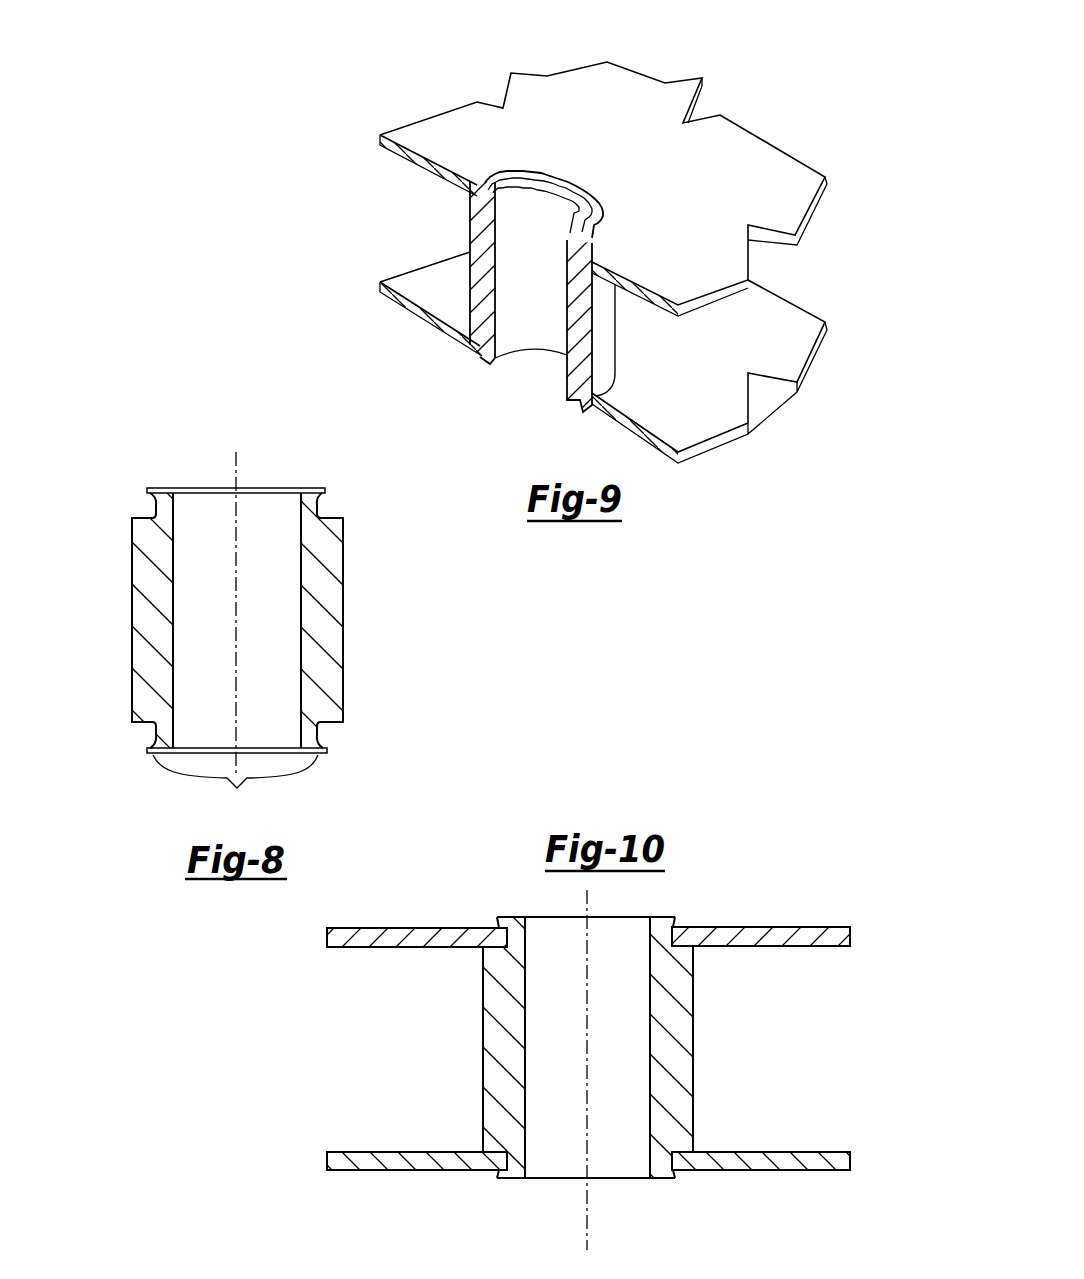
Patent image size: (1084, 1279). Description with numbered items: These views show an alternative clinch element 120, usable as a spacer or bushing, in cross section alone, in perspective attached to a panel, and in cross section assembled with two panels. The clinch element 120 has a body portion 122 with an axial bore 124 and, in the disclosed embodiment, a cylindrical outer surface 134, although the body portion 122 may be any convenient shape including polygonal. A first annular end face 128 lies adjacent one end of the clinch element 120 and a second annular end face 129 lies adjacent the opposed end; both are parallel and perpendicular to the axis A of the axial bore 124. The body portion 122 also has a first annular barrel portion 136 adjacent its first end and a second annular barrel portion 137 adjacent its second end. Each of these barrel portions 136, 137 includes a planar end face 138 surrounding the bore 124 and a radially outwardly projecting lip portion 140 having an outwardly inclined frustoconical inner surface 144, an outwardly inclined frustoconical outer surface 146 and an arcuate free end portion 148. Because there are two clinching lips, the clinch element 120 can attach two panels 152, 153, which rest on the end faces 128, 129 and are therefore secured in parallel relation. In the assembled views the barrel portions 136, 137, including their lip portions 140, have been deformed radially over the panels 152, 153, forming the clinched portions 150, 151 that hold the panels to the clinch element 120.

In FIG. 8, the clinch element 120 is at (100, 538).
In FIG. 9, the clinch element 120 is at (465, 236).
In FIG. 10, the clinch element 120 is at (698, 1073).
In FIG. 8, the body portion 122 is at (138, 608).
In FIG. 10, the body portion 122 is at (678, 1010).
In FIG. 8, the axial bore 124 is at (300, 597).
In FIG. 9, the axial bore 124 is at (513, 320).
In FIG. 10, the axial bore 124 is at (649, 1068).
In FIG. 8, the first annular end face 128 is at (340, 515).
In FIG. 8, the second annular end face 129 is at (348, 722).
In FIG. 8, the outer surface 134 is at (133, 672).
In FIG. 9, the outer surface 134 is at (612, 318).
In FIG. 10, the outer surface 134 is at (483, 1036).
In FIG. 8, the first annular barrel portion 136 is at (152, 508).
In FIG. 8, the second annular barrel portion 137 is at (145, 734).
In FIG. 8, the planar end face 138 is at (170, 490).
In FIG. 8, the radially outwardly projecting lip portion 140 is at (332, 480).
In FIG. 8, the frustoconical inner surface 144 is at (153, 755).
In FIG. 8, the frustoconical outer surface 146 is at (328, 755).
In FIG. 8, the arcuate free end portion 148 is at (148, 488).
In FIG. 9, the clinched portion 150 is at (596, 200).
In FIG. 10, the clinched portion 150 is at (507, 920).
In FIG. 9, the clinched portion 151 is at (577, 405).
In FIG. 10, the clinched portion 151 is at (510, 1178).
In FIG. 9, the panel 152 is at (442, 132).
In FIG. 10, the panel 152 is at (412, 950).
In FIG. 9, the panel 153 is at (700, 420).
In FIG. 10, the panel 153 is at (426, 1148).
In FIG. 8, the axis A is at (240, 668).
In FIG. 10, the axis A is at (590, 1100).